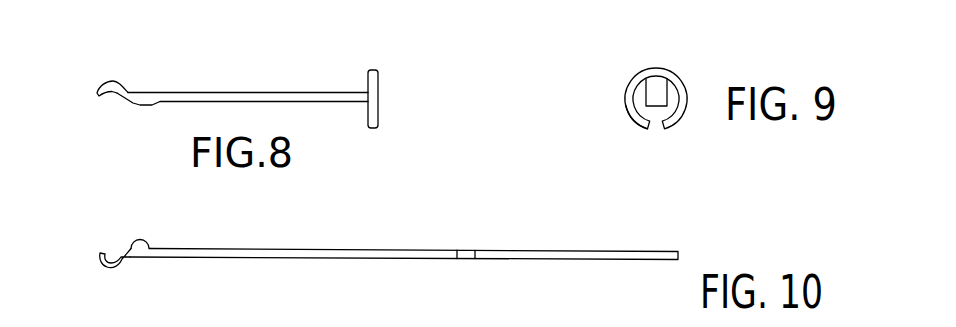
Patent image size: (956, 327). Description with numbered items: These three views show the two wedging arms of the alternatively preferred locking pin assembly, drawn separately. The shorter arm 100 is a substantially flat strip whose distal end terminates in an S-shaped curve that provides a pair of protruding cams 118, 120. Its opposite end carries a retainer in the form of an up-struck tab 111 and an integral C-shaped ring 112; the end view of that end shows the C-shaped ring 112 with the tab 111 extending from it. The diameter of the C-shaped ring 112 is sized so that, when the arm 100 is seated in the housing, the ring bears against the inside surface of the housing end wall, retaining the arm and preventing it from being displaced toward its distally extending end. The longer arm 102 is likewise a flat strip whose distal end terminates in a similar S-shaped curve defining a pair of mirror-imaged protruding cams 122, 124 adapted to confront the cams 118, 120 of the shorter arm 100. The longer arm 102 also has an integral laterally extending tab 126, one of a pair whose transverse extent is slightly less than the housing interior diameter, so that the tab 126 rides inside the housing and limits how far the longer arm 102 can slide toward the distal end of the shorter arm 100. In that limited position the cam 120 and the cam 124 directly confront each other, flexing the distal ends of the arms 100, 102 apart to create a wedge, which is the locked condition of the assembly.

In FIG. 8, the arm 100 is at (300, 93).
In FIG. 10, the arm 102 is at (298, 248).
In FIG. 9, the up-struck tab 111 is at (660, 91).
In FIG. 8, the C-shaped ring 112 is at (378, 97).
In FIG. 9, the C-shaped ring 112 is at (636, 121).
In FIG. 8, the protruding cam 118 is at (113, 81).
In FIG. 8, the protruding cam 120 is at (137, 107).
In FIG. 10, the protruding cam 122 is at (118, 267).
In FIG. 10, the protruding cam 124 is at (145, 243).
In FIG. 10, the laterally extending tab 126 is at (465, 259).